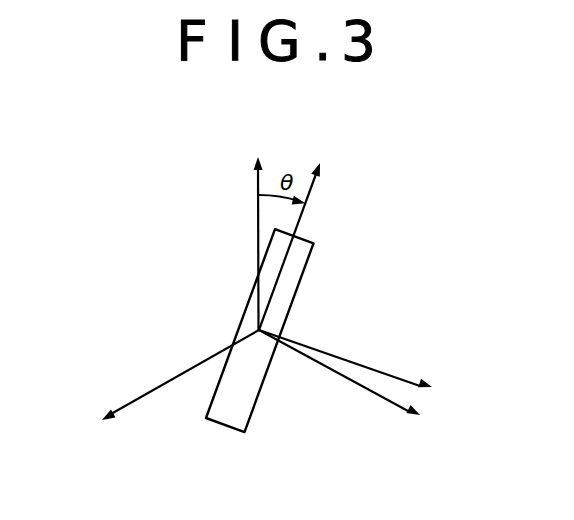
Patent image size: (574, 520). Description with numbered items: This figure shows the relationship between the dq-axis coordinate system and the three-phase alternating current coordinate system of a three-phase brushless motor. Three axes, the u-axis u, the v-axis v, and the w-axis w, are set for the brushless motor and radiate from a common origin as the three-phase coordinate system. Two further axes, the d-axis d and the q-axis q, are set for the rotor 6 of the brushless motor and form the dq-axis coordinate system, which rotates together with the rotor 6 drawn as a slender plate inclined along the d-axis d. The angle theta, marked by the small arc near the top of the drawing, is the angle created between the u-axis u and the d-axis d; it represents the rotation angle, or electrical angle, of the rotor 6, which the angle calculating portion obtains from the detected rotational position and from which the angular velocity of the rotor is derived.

The rotor 6 is at (305, 268).
The u-axis u is at (258, 230).
The d-axis d is at (294, 234).
The w-axis w is at (169, 382).
The q-axis q is at (357, 367).
The v-axis v is at (349, 382).